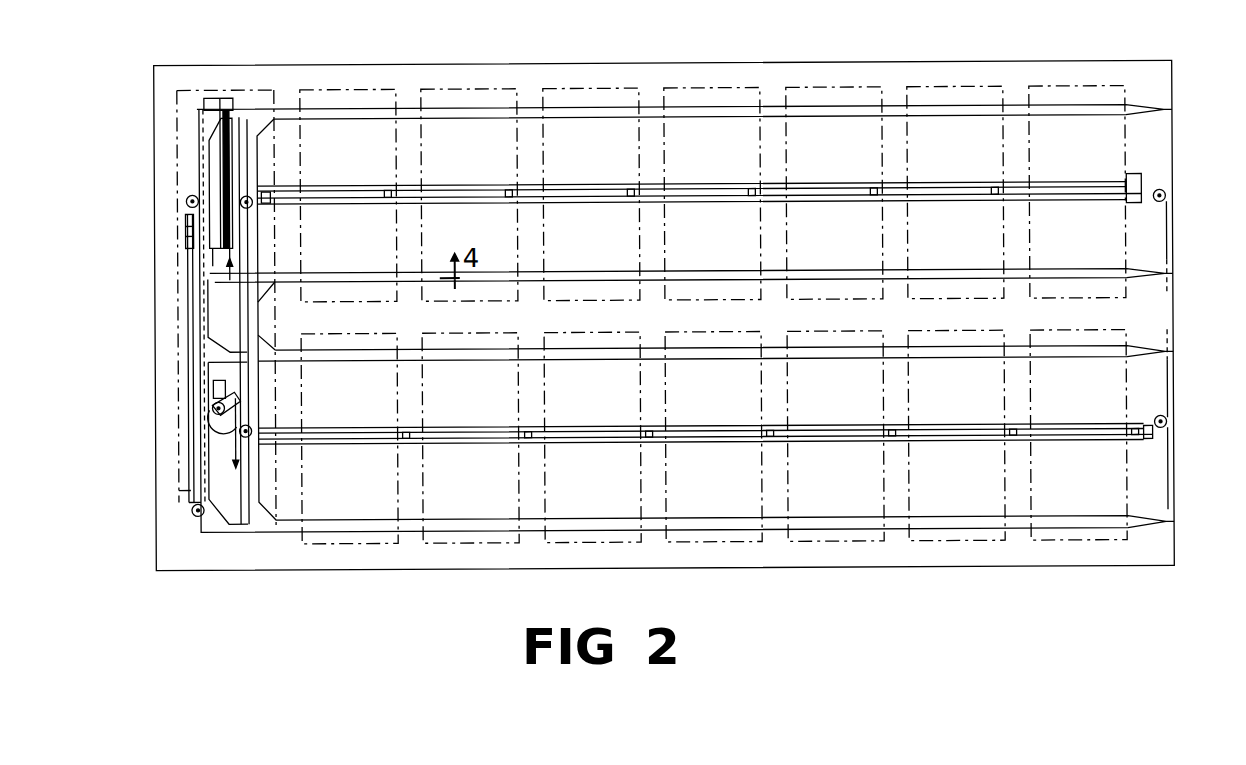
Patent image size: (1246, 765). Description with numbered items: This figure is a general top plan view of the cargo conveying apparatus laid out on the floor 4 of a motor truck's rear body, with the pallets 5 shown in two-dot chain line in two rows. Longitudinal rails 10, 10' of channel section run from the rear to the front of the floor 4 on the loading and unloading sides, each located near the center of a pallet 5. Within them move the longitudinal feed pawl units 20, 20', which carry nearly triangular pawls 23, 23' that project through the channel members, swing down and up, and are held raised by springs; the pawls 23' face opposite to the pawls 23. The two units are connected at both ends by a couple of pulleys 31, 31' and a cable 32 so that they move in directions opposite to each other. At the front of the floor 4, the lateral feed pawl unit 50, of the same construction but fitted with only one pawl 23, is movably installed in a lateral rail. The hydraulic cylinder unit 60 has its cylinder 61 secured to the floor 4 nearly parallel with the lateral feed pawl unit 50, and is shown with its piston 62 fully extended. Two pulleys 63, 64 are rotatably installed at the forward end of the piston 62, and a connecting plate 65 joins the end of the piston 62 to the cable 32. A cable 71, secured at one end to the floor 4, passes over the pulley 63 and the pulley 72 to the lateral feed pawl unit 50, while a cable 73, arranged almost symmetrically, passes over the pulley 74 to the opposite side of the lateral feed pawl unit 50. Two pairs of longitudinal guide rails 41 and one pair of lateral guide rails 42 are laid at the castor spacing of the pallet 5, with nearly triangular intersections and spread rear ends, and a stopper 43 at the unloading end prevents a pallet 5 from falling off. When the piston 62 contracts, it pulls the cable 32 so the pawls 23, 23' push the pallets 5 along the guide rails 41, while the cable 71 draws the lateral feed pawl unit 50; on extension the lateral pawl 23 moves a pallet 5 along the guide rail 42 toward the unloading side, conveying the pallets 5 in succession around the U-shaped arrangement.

The floor 4 is at (618, 78).
The pallet 5 is at (178, 97).
The longitudinal rail 10 is at (700, 411).
The longitudinal rail 10' is at (691, 169).
The longitudinal feed pawl unit 20 is at (705, 412).
The longitudinal feed pawl unit 20' is at (699, 217).
The pawl 23 is at (621, 333).
The pawl 23' is at (681, 176).
The pulley 31 is at (726, 446).
The pulley 31' is at (726, 178).
The cable 32 is at (243, 261).
The guide rail 41 is at (608, 272).
The guide rail 42 is at (198, 125).
The stopper 43 is at (1135, 178).
The lateral feed pawl unit 50 is at (187, 247).
The hydraulic cylinder unit 60 is at (218, 96).
The cylinder 61 is at (218, 140).
The piston 62 is at (222, 331).
The pulley 63 is at (228, 413).
The pulley 64 is at (162, 431).
The connecting plate 65 is at (235, 397).
The cable 71 is at (190, 489).
The pulley 72 is at (192, 518).
The cable 73 is at (228, 309).
The pulley 74 is at (187, 199).